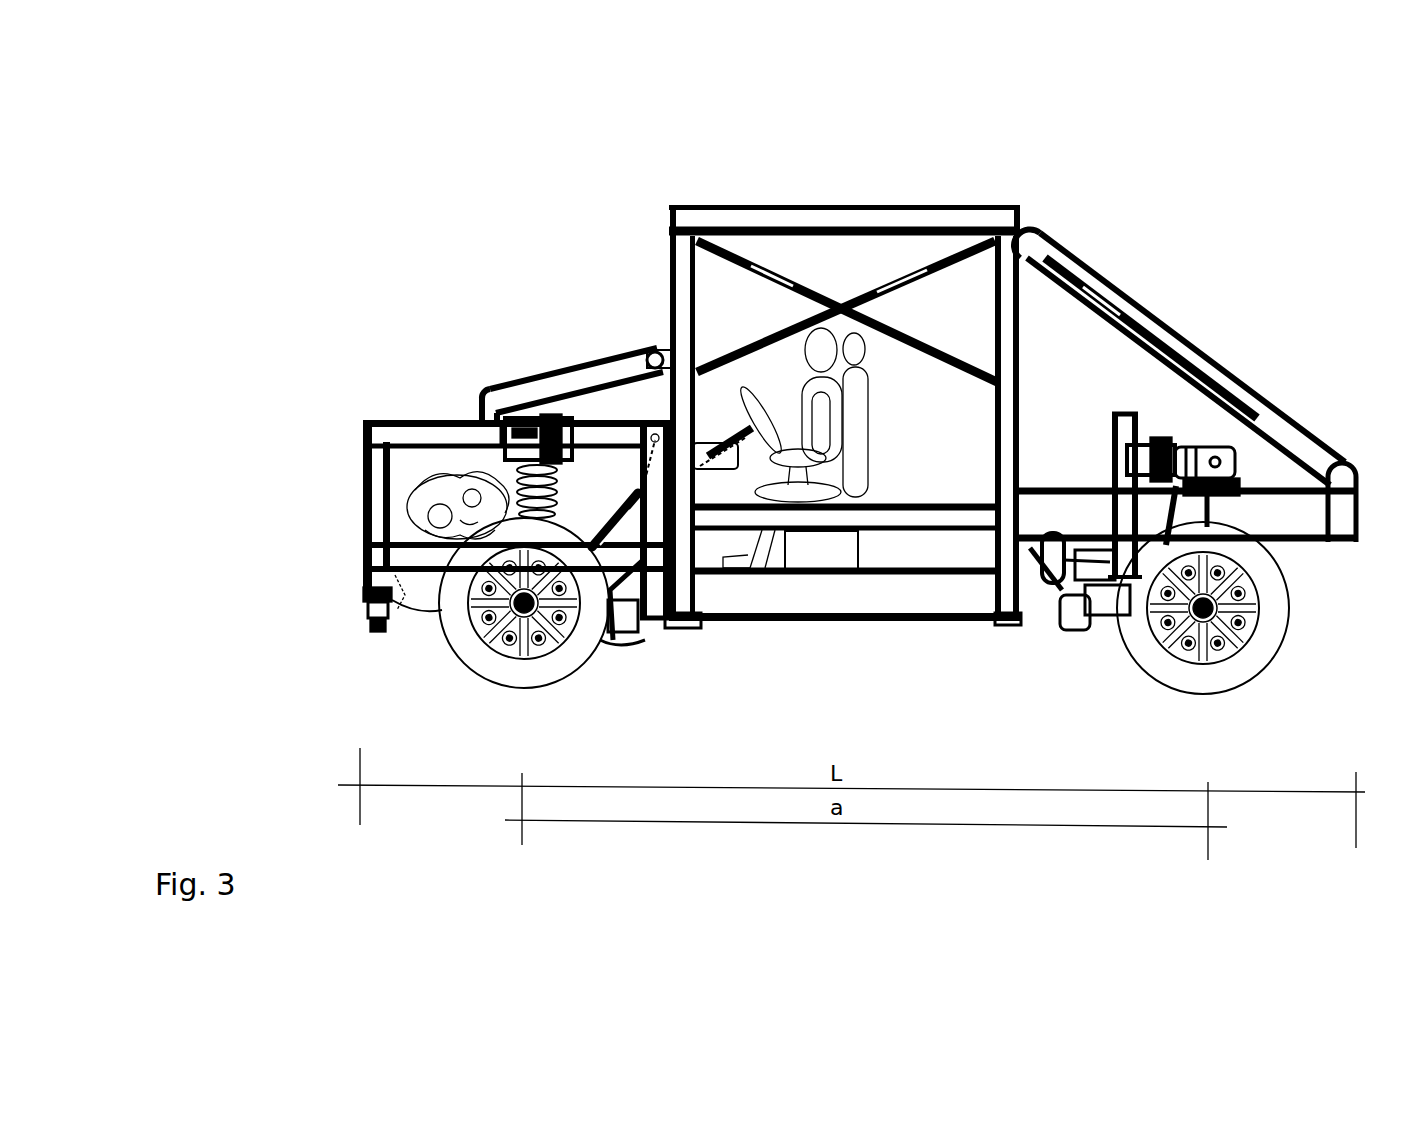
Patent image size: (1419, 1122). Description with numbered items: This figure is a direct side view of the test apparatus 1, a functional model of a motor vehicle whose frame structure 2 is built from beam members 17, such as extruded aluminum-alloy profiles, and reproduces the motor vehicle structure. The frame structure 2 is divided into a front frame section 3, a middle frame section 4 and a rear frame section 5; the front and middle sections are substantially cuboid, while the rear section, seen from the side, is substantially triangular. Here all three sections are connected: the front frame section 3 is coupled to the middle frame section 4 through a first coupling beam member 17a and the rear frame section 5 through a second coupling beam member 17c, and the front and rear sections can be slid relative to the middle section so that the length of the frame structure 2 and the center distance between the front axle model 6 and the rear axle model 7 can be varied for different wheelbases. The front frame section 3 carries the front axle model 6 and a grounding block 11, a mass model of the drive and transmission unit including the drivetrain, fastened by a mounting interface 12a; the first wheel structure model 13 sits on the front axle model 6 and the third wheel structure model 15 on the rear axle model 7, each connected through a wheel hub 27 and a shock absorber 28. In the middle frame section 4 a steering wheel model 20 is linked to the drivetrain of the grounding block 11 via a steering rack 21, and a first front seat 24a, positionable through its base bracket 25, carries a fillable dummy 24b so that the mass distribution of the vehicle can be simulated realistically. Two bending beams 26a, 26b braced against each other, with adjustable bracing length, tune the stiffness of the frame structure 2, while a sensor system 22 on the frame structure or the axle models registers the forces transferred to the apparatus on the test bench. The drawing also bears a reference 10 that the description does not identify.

The test apparatus 1 is at (345, 180).
The frame structure 2 is at (527, 192).
The front frame section 3 is at (345, 420).
The middle frame section 4 is at (905, 170).
The rear frame section 5 is at (1190, 300).
The front axle model 6 is at (452, 610).
The rear axle model 7 is at (1235, 650).
The steering linkage 10 is at (655, 437).
The grounding block 11 is at (412, 513).
The mounting interface 12a is at (365, 612).
The first wheel structure model 13 is at (450, 608).
The third wheel structure model 15 is at (1250, 555).
The beam members 17 is at (430, 437).
The first coupling beam member 17a is at (515, 385).
The second coupling beam member 17c is at (1185, 360).
The steering wheel model 20 is at (740, 453).
The steering rack 21 is at (636, 505).
The sensor system 22 is at (993, 532).
The first front seat 24a is at (860, 412).
The second weight component 24b is at (815, 387).
The base bracket 25 is at (836, 555).
The bending beam 26a is at (815, 285).
The bending beam 26b is at (875, 285).
The wheel hub 27 is at (545, 643).
The shock absorber 28 is at (515, 462).